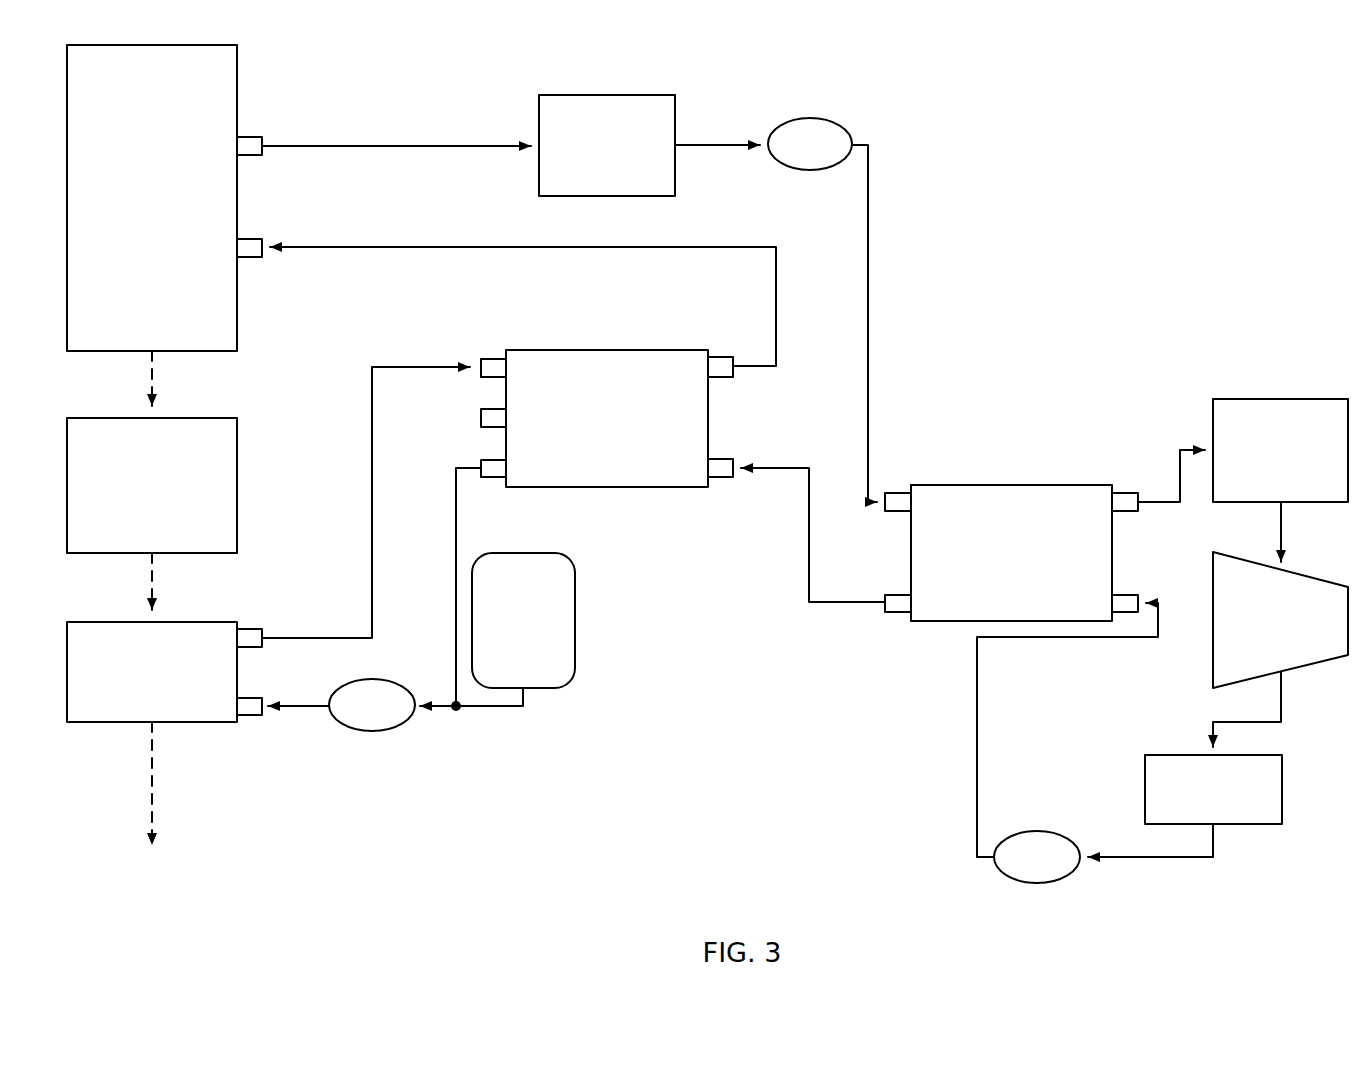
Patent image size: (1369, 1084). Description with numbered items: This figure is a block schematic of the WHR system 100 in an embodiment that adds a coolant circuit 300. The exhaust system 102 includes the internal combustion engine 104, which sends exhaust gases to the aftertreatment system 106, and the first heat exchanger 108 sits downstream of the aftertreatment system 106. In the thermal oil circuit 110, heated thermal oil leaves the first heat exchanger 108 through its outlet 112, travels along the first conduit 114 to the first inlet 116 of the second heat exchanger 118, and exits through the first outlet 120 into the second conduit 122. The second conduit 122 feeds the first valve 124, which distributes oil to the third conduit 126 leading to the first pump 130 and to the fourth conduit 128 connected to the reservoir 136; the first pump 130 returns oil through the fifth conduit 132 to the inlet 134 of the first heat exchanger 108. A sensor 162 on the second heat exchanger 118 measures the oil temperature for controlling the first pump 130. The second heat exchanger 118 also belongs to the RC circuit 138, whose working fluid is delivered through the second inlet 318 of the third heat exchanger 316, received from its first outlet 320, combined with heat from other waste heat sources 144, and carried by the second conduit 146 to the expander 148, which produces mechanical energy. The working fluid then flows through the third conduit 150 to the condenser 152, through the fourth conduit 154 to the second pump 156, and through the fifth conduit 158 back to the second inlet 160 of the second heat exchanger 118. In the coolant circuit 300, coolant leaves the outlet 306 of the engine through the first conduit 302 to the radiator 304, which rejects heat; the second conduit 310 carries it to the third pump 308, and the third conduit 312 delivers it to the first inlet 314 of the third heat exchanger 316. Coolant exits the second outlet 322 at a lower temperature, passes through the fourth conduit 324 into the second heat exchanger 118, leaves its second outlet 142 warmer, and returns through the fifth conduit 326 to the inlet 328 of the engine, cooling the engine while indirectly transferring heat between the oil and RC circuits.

The WHR system 100 is at (1284, 127).
The exhaust system 102 is at (115, 805).
The internal combustion engine 104 is at (240, 130).
The aftertreatment system 106 is at (240, 478).
The first heat exchanger 108 is at (95, 722).
The thermal oil circuit 110 is at (400, 350).
The outlet 112 is at (255, 629).
The first conduit 114 is at (370, 488).
The first inlet 116 is at (481, 362).
The second heat exchanger 118 is at (600, 350).
The first outlet 120 is at (500, 480).
The second conduit 122 is at (455, 588).
The first valve 124 is at (462, 708).
The third conduit 126 is at (440, 705).
The fourth conduit 128 is at (510, 708).
The first pump 130 is at (380, 731).
The fifth conduit 132 is at (312, 707).
The inlet 134 is at (258, 716).
The reservoir 136 is at (575, 620).
The RC circuit 138 is at (1088, 418).
The second outlet 142 is at (733, 362).
The other waste heat sources 144 is at (1285, 399).
The second conduit 146 is at (1205, 448).
The expander 148 is at (1208, 645).
The third conduit 150 is at (1210, 730).
The condenser 152 is at (1282, 790).
The fourth conduit 154 is at (1150, 857).
The second pump 156 is at (1035, 832).
The fifth conduit 158 is at (977, 755).
The second inlet 160 is at (733, 480).
The sensor 162 is at (487, 428).
The coolant circuit 300 is at (1014, 315).
The first conduit 302 is at (420, 145).
The radiator 304 is at (675, 128).
The outlet 306 is at (262, 157).
The third pump 308 is at (812, 118).
The second conduit 310 is at (740, 145).
The third conduit 312 is at (870, 245).
The first inlet 314 is at (895, 493).
The third heat exchanger 316 is at (1015, 485).
The second inlet 318 is at (1135, 595).
The first outlet 320 is at (1135, 493).
The second outlet 322 is at (890, 612).
The fourth conduit 324 is at (810, 600).
The fifth conduit 326 is at (460, 247).
The inlet 328 is at (262, 259).